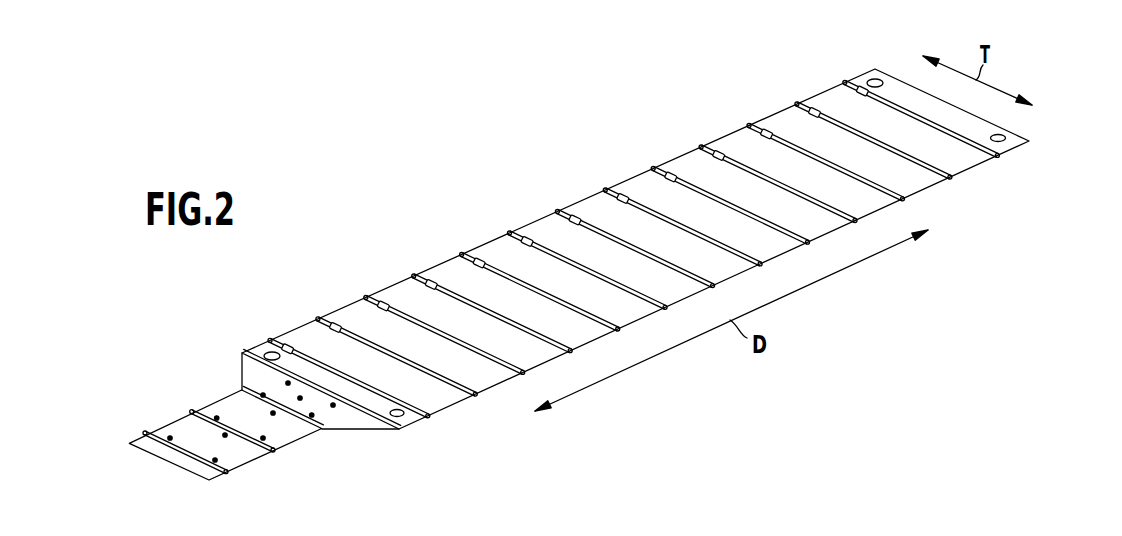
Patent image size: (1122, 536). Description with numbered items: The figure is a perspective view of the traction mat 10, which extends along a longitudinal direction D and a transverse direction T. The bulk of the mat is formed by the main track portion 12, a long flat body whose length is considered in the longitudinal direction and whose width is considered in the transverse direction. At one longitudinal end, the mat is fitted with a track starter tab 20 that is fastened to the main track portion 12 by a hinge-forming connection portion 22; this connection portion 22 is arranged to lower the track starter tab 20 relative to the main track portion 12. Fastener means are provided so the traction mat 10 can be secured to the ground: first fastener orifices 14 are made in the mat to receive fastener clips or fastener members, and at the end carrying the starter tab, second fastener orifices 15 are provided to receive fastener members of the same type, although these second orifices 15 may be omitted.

The traction mat 10 is at (386, 218).
The main track portion 12 is at (572, 195).
The first fastener orifices 14 is at (868, 79).
The second fastener orifices 15 is at (271, 351).
The track starter tab 20 is at (242, 455).
The hinge-forming connection portion 22 is at (341, 425).